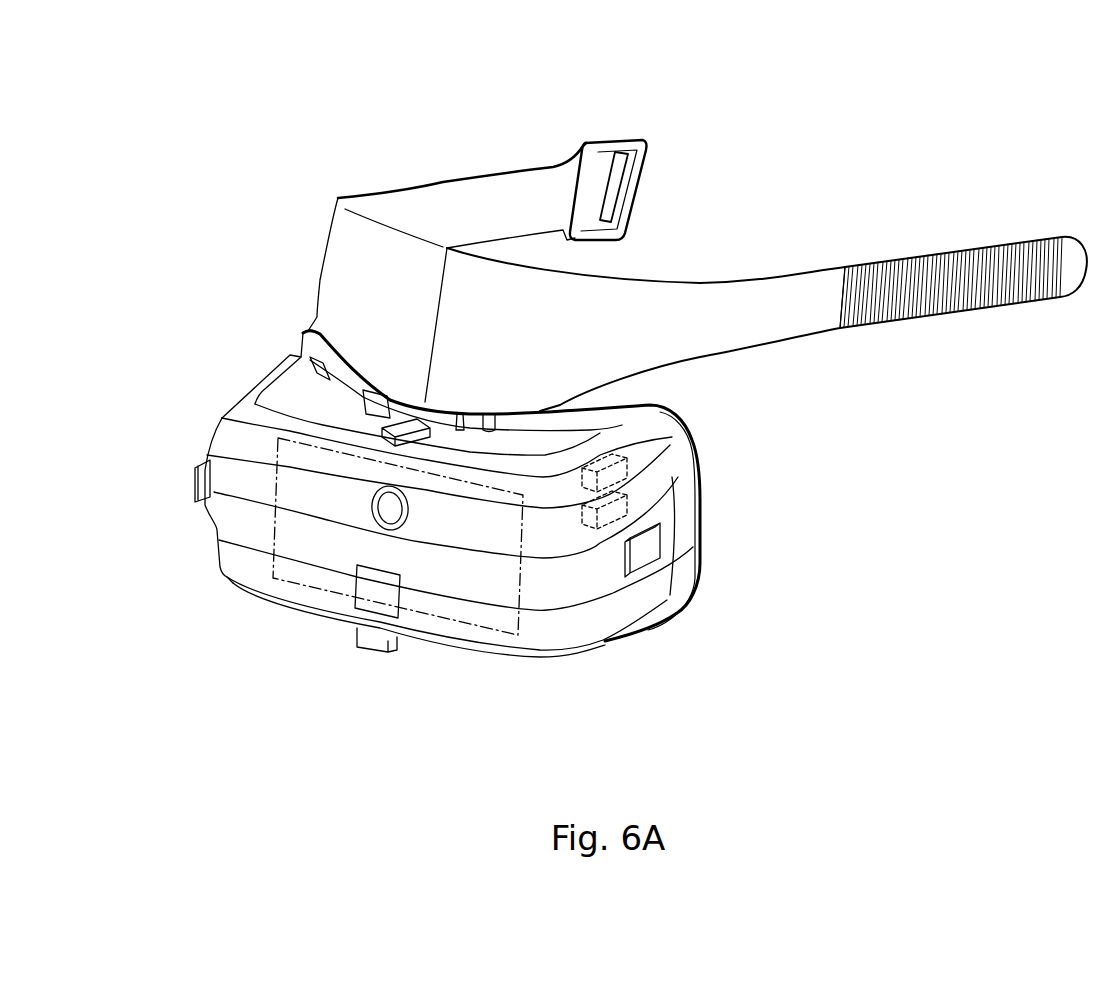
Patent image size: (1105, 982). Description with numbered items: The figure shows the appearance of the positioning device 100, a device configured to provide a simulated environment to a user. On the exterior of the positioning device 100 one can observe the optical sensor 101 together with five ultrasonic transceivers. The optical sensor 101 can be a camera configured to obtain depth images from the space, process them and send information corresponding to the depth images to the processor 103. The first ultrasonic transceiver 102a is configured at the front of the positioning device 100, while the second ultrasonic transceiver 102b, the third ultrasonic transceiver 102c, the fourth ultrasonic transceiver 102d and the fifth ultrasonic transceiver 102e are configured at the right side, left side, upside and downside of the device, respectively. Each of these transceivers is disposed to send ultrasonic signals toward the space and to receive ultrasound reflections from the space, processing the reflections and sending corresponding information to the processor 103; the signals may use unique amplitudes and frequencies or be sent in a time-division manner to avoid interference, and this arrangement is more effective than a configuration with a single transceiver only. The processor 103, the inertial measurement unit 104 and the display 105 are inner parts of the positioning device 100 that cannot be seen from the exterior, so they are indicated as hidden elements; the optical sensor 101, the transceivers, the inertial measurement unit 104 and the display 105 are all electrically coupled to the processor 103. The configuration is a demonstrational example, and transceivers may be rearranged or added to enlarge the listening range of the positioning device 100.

The positioning device 100 is at (70, 52).
The optical sensor 101 is at (407, 513).
The first ultrasonic transceiver 102a is at (355, 603).
The second ultrasonic transceiver 102b is at (195, 480).
The third ultrasonic transceiver 102c is at (647, 550).
The fourth ultrasonic transceiver 102d is at (396, 420).
The fifth ultrasonic transceiver 102e is at (365, 652).
The processor 103 is at (627, 468).
The inertial measurement unit 104 is at (627, 505).
The display 105 is at (517, 628).